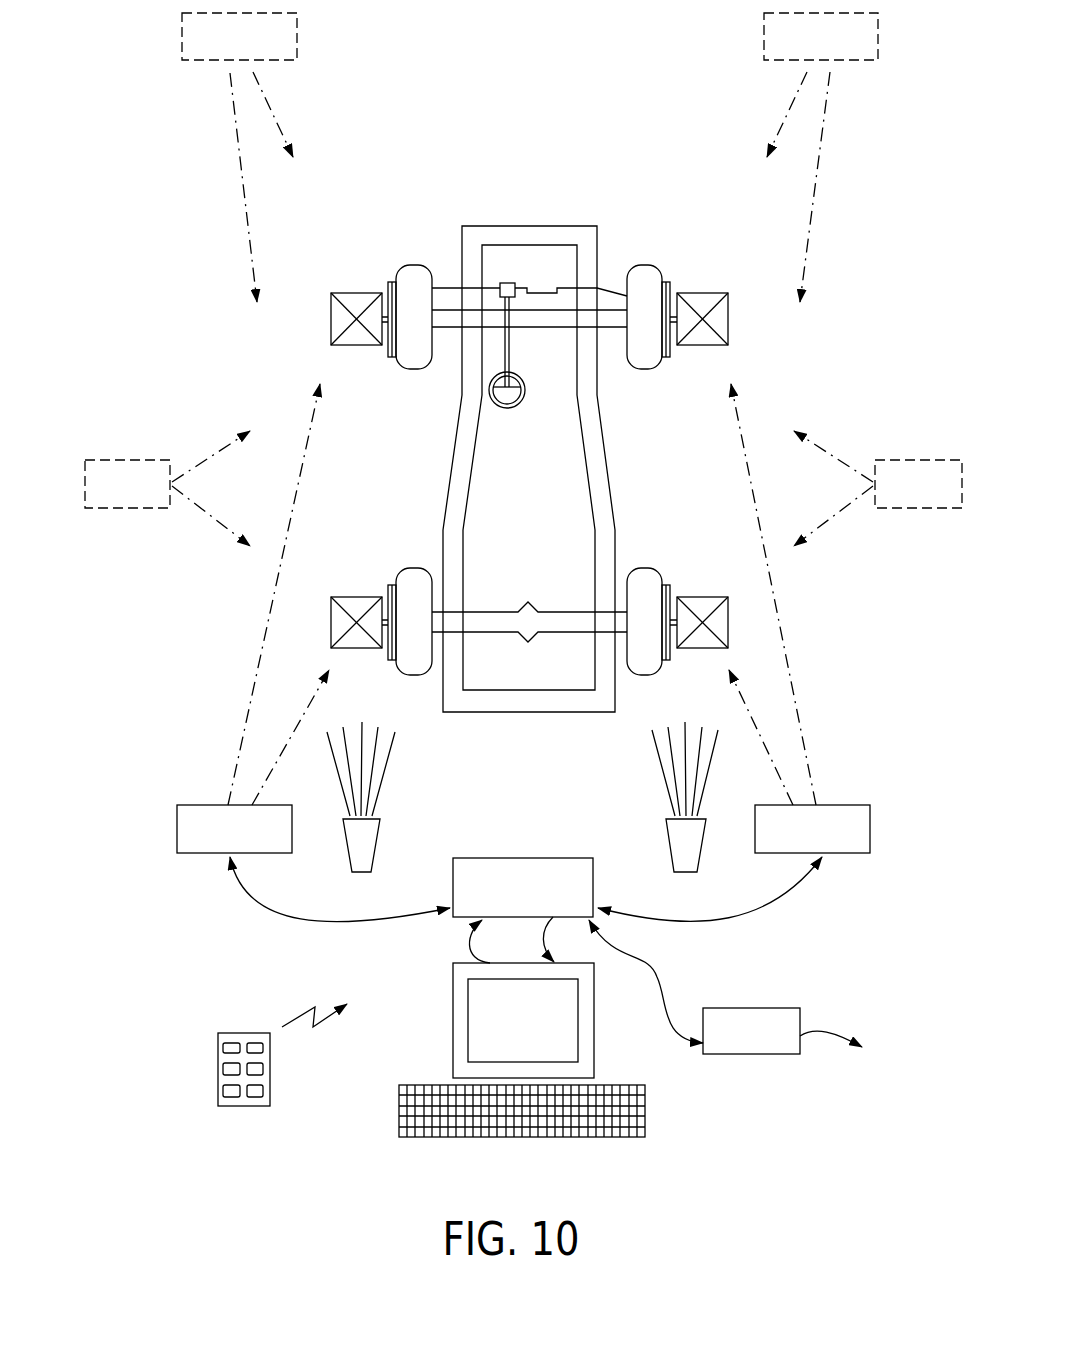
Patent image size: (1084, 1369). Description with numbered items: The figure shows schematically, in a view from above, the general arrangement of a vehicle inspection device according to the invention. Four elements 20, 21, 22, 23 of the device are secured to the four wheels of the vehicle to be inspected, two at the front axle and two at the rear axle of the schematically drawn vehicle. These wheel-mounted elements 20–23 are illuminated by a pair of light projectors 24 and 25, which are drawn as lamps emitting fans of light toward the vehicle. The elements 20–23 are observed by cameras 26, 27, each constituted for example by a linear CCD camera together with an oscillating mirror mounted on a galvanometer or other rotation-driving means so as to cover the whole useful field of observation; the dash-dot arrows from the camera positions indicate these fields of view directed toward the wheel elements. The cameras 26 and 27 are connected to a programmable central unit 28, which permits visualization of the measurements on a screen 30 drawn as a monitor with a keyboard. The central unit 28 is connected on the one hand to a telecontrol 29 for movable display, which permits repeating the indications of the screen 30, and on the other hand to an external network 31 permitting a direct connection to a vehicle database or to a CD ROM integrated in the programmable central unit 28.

The element secured to a wheel 20 is at (356, 292).
The element secured to a wheel 21 is at (706, 292).
The element secured to a wheel 22 is at (356, 596).
The element secured to a wheel 23 is at (708, 596).
The light projector 24 is at (374, 843).
The light projector 25 is at (668, 853).
The camera 26 is at (180, 37).
The camera 27 is at (880, 37).
The programmable central unit 28 is at (497, 858).
The telecontrol 29 is at (218, 1058).
The screen 30 is at (453, 1043).
The external network 31 is at (749, 1055).